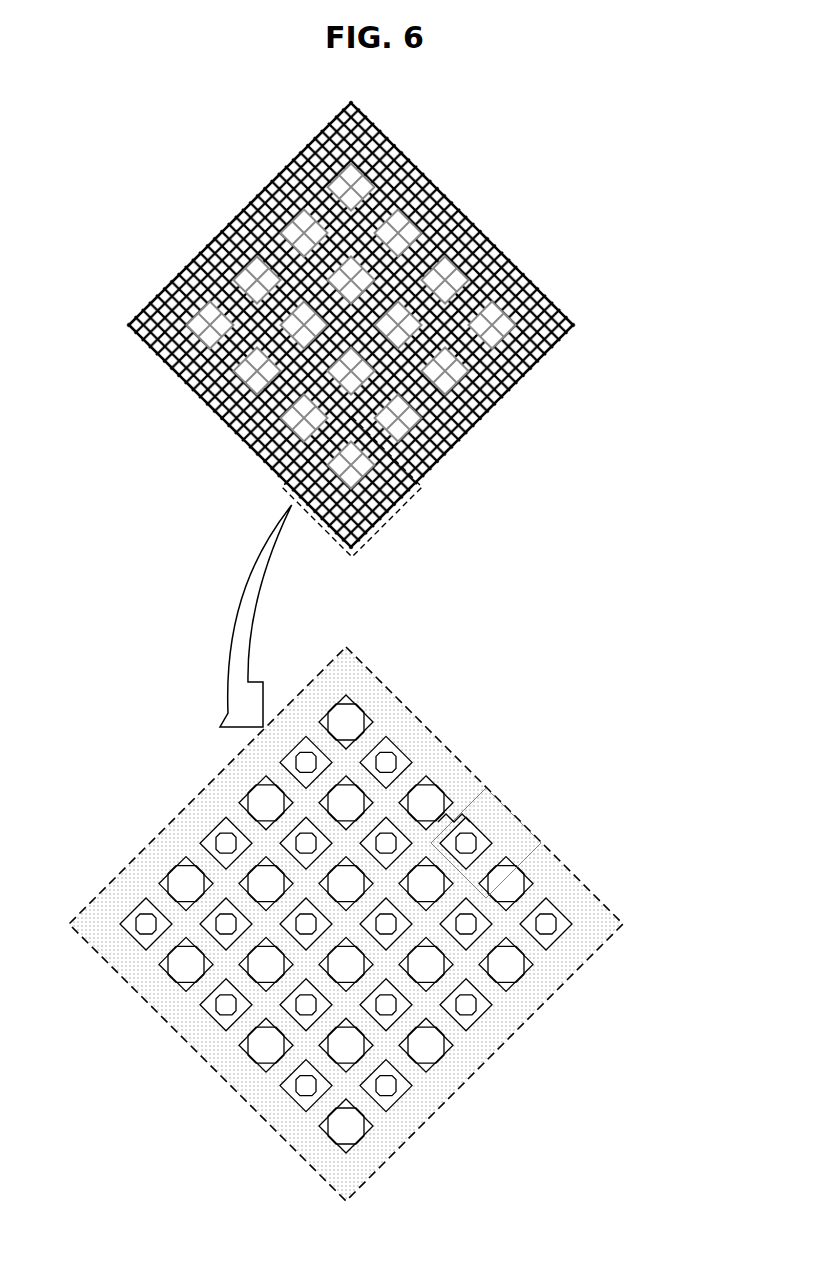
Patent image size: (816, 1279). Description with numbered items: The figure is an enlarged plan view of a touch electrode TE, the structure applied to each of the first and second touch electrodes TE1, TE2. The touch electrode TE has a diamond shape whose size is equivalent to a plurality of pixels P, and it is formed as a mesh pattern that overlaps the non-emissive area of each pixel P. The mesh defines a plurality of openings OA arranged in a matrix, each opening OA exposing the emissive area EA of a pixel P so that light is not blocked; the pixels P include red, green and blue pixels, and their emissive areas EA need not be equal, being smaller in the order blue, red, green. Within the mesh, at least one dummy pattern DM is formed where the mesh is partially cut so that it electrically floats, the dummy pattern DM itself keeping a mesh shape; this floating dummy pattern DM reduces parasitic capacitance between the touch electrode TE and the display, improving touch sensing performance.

The touch electrode TE is at (373, 650).
The first touch electrode TE1 is at (351, 325).
The second touch electrode TE2 is at (250, 174).
The opening OA is at (538, 292).
The dummy pattern DM is at (452, 812).
The pixel P is at (490, 786).
The emissive area EA is at (478, 838).